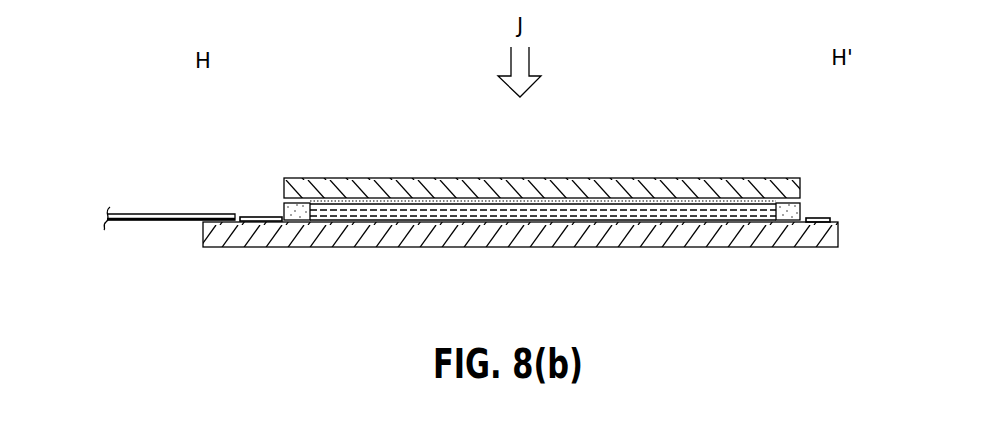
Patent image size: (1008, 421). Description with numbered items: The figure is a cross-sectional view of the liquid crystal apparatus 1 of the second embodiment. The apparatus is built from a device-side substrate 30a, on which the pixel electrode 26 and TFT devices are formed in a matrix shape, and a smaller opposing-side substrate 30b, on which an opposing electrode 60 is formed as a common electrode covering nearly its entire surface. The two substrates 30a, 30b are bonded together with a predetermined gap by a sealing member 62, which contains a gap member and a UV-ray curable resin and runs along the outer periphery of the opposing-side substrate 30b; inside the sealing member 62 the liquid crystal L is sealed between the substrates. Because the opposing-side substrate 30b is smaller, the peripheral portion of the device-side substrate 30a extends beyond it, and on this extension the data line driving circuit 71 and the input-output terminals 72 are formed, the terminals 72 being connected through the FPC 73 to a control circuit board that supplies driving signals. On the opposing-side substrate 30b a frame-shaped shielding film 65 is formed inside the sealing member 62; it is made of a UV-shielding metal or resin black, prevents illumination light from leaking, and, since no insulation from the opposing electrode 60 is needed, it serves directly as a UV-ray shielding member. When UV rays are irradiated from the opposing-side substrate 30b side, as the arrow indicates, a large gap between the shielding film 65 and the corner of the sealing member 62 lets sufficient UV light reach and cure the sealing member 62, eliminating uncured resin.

The liquid crystal apparatus 1 is at (698, 146).
The pixel electrode 26 is at (390, 221).
The device-side substrate 30a is at (617, 247).
The opposing-side substrate 30b is at (513, 192).
The opposing electrode 60 is at (575, 197).
The sealing member 62 is at (284, 204).
The shielding film 65 is at (322, 202).
The data line driving circuit 71 is at (262, 217).
The input-output terminals 72 is at (215, 212).
The FPC (Flexible Printed Circuit) 73 is at (160, 222).
The liquid crystal L is at (500, 222).